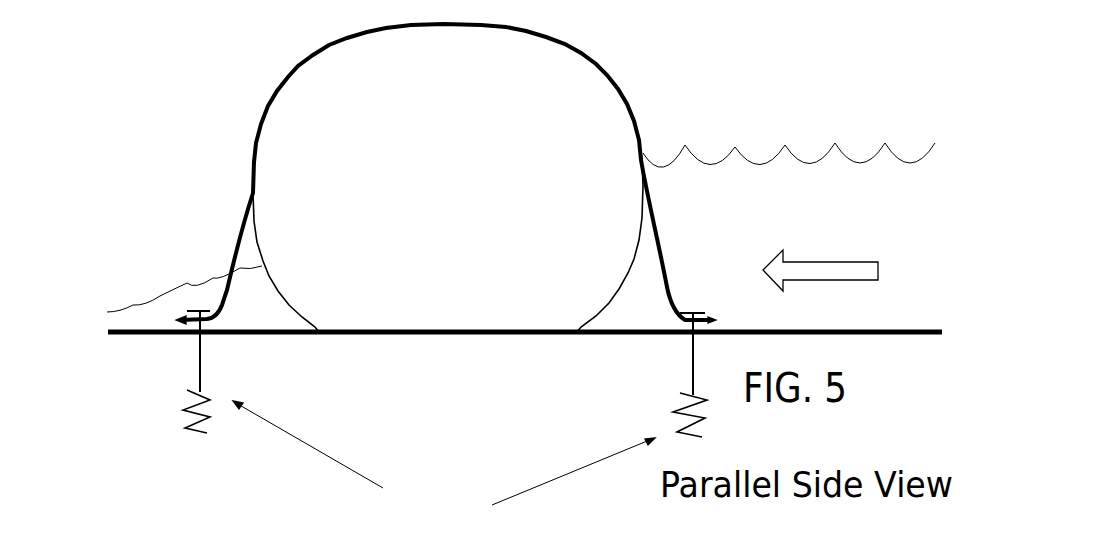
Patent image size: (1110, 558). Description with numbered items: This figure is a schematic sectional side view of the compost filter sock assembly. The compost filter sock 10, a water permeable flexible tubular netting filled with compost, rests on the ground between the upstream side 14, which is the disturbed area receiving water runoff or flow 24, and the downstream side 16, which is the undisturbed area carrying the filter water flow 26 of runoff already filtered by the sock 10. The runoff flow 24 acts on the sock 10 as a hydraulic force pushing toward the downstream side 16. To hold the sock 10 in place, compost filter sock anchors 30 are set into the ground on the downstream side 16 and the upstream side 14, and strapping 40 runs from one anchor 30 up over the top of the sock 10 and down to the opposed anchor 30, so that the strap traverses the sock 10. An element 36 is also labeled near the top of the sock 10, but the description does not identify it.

The compost filter sock 10 is at (454, 158).
The upstream side 14 is at (873, 128).
The downstream side 16 is at (105, 215).
The water runoff or flow 24 is at (931, 240).
The filter water flow 26 is at (150, 317).
The compost filter sock anchors 30 is at (203, 357).
The top of barrier 36 is at (843, 7).
The strapping 40 is at (690, 215).